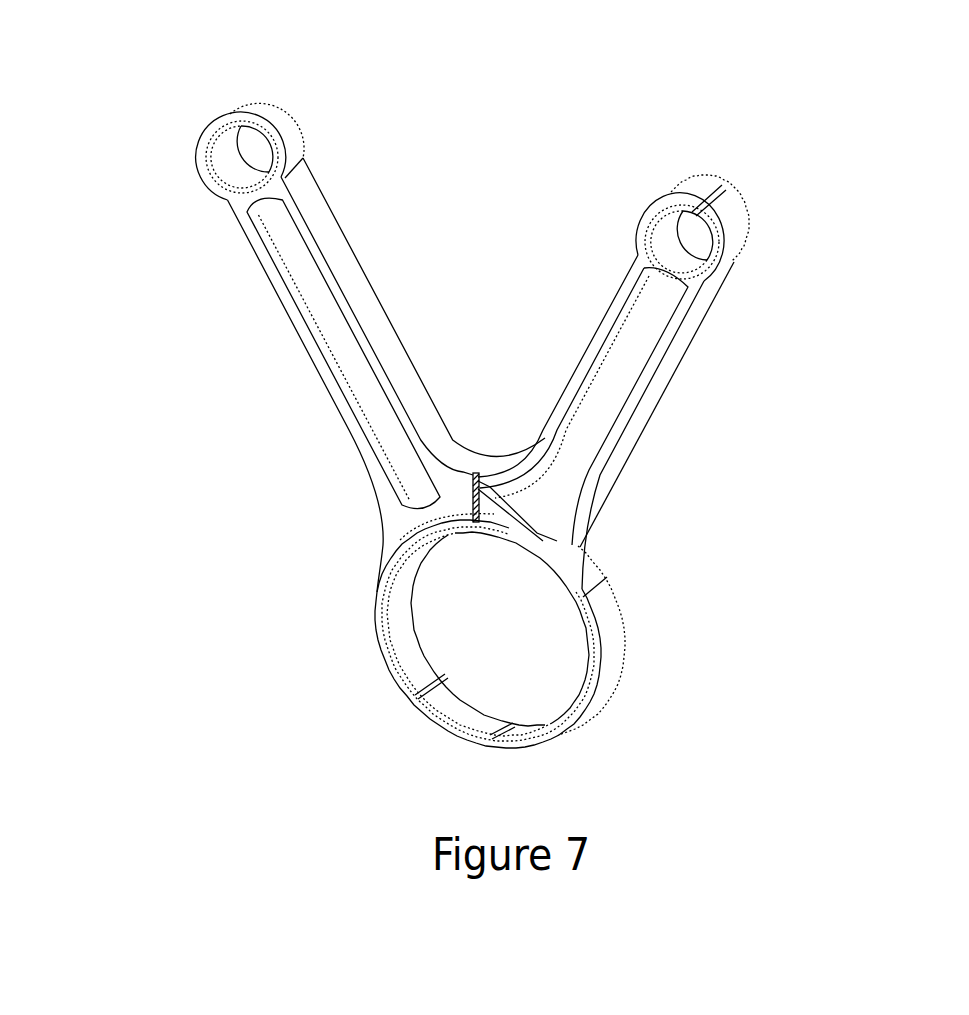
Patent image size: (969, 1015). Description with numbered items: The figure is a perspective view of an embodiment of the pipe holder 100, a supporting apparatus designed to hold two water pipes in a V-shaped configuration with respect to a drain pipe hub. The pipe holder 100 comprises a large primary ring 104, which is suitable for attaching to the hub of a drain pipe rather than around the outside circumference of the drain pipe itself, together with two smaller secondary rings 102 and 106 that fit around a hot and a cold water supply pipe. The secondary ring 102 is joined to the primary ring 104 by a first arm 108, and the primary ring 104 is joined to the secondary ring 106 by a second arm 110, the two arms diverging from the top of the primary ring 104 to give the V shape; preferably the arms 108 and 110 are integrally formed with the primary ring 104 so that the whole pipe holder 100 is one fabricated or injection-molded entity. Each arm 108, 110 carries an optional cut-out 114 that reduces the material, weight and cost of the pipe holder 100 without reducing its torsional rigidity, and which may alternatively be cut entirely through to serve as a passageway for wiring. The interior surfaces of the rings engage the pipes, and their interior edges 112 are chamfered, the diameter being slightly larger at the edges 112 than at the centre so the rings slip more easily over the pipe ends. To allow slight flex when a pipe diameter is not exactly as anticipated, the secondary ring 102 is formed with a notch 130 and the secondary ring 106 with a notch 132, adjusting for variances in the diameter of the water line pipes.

The pipe holder 100 is at (521, 170).
The secondary ring 102 is at (283, 100).
The primary ring 104 is at (542, 610).
The secondary ring 106 is at (737, 176).
The arm 108 is at (385, 307).
The arm 110 is at (670, 398).
The interior edge 112 is at (195, 156).
The cut-out 114 is at (588, 472).
The notch 130 is at (216, 100).
The notch 132 is at (720, 172).